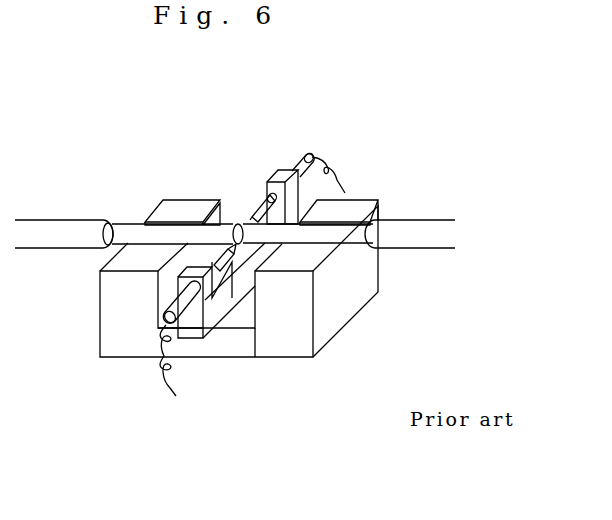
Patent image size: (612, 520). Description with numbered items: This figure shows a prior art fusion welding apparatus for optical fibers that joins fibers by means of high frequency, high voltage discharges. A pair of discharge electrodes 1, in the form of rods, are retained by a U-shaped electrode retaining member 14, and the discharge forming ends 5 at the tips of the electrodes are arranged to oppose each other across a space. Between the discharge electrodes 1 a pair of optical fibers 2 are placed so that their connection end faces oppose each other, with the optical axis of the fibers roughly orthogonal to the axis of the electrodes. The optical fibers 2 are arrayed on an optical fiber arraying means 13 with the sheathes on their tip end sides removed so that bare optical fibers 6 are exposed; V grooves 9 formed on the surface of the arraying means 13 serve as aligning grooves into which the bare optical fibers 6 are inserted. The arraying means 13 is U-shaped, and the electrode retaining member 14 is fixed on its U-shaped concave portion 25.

The discharge electrode 1 is at (306, 157).
The optical fiber 2 is at (60, 225).
The discharge forming end 5 is at (252, 218).
The bare optical fiber 6 is at (162, 224).
The V groove 9 is at (187, 233).
The optical fiber arraying means 13 is at (300, 348).
The electrode retaining member 14 is at (228, 300).
The U-shaped concave portion 25 is at (228, 325).